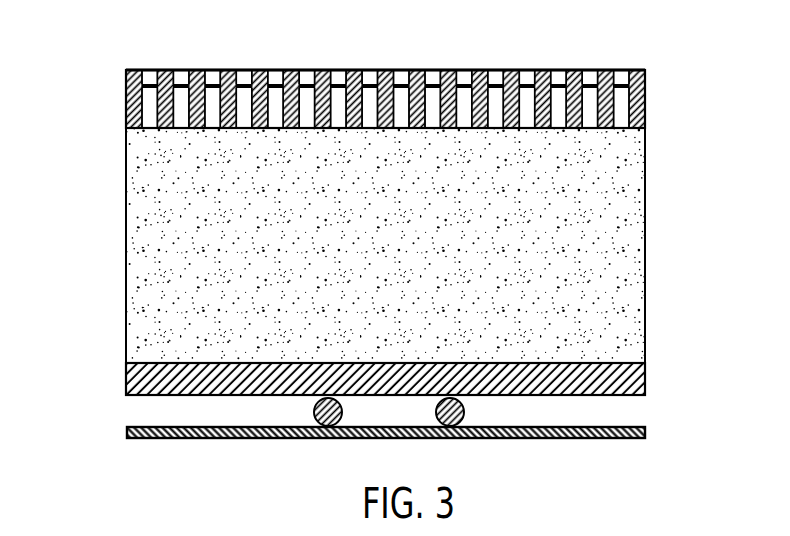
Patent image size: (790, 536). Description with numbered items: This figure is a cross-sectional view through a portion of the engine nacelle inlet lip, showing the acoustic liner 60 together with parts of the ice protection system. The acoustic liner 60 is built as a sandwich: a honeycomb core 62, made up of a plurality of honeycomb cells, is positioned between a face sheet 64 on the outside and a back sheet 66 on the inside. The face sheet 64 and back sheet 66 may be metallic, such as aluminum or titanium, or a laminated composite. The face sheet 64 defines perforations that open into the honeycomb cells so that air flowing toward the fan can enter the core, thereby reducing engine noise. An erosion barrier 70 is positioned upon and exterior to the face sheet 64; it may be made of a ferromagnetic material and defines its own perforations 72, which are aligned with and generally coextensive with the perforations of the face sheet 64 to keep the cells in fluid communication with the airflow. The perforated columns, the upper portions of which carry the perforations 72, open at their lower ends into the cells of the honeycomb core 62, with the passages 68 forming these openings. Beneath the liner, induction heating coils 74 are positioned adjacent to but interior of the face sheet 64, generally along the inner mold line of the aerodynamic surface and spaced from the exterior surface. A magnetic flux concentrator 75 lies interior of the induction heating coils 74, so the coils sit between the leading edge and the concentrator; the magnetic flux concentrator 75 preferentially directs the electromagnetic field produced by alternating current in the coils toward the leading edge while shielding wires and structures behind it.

The acoustic liner 60 is at (101, 220).
The honeycomb core 62 is at (646, 233).
The face sheet 64 is at (646, 117).
The back sheet 66 is at (646, 380).
The channel / gap 68 is at (398, 100).
The erosion barrier 70 is at (646, 74).
The perforations 72 is at (210, 82).
The induction heating coil 74 is at (341, 406).
The magnetic flux concentrator 75 is at (646, 430).